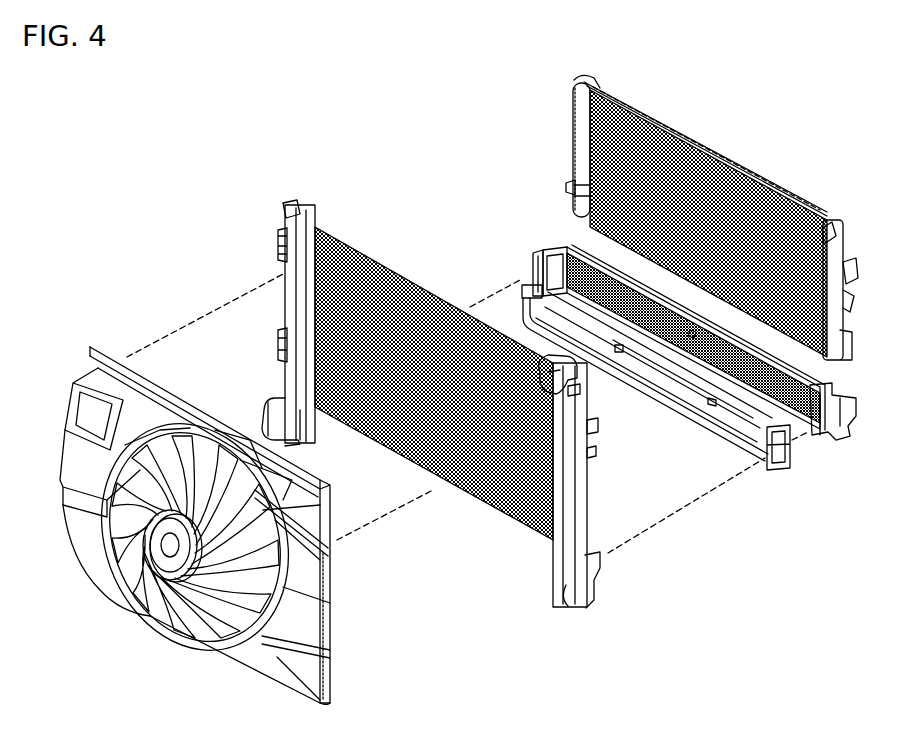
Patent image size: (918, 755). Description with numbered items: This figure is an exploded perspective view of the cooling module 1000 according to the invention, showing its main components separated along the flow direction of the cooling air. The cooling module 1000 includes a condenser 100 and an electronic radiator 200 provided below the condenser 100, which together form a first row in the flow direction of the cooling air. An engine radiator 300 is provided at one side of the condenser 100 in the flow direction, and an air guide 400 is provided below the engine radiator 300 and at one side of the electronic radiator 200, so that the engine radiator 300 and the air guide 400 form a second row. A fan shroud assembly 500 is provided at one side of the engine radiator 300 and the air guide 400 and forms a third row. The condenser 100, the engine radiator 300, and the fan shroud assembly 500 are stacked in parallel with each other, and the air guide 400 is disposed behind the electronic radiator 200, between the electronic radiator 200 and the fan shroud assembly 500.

The cooling module 1000 is at (443, 150).
The condenser 100 is at (735, 158).
The electronic radiator 200 is at (567, 247).
The engine radiator 300 is at (366, 240).
The air guide 400 is at (523, 282).
The fan shroud assembly 500 is at (112, 348).